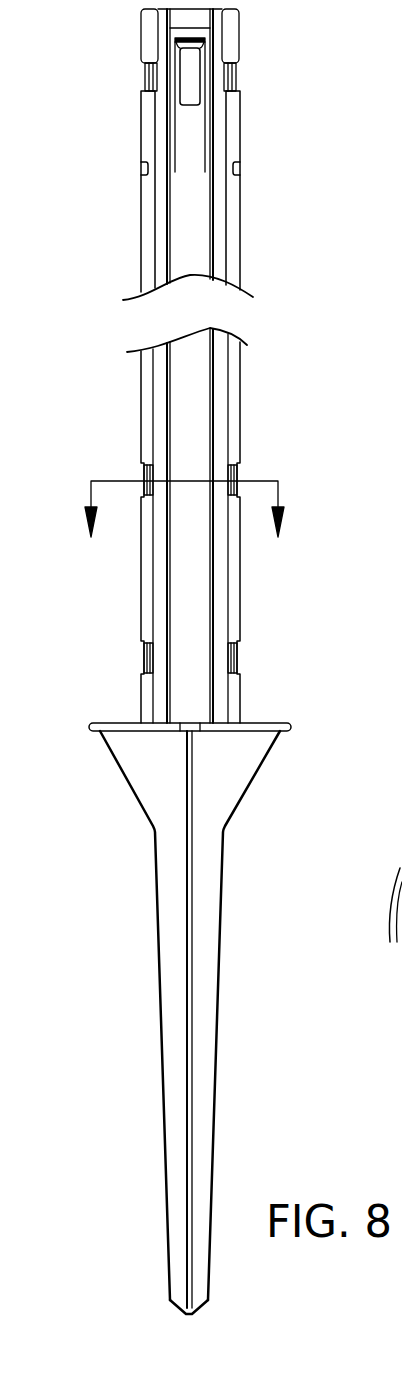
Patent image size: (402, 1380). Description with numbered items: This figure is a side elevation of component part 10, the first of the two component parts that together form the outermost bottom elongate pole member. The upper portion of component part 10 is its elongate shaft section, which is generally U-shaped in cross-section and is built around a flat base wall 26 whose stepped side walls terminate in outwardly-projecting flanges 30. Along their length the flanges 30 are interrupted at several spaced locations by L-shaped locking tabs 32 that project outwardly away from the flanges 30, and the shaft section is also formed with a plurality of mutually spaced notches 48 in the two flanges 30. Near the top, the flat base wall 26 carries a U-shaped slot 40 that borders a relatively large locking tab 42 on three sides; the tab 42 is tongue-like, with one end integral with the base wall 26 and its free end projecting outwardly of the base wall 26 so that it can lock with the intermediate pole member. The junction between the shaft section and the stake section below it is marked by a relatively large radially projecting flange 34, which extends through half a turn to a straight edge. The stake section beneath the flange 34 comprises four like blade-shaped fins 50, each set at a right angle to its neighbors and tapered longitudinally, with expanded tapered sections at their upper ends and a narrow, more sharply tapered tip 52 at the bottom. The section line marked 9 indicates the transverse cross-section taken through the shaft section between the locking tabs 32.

The component part 10 is at (190, 671).
The flat base wall 26 is at (197, 387).
The outwardly-projecting flanges 30 is at (147, 212).
The L-shaped locking tabs 32 is at (145, 73).
The radially projecting flange 34 is at (268, 723).
The U-shaped slot 40 is at (210, 82).
The locking tab 42 is at (190, 118).
The notches 48 is at (143, 163).
The blade-shaped fins 50 is at (187, 937).
The tip 52 is at (202, 1308).
The section line 9- 9 is at (185, 534).